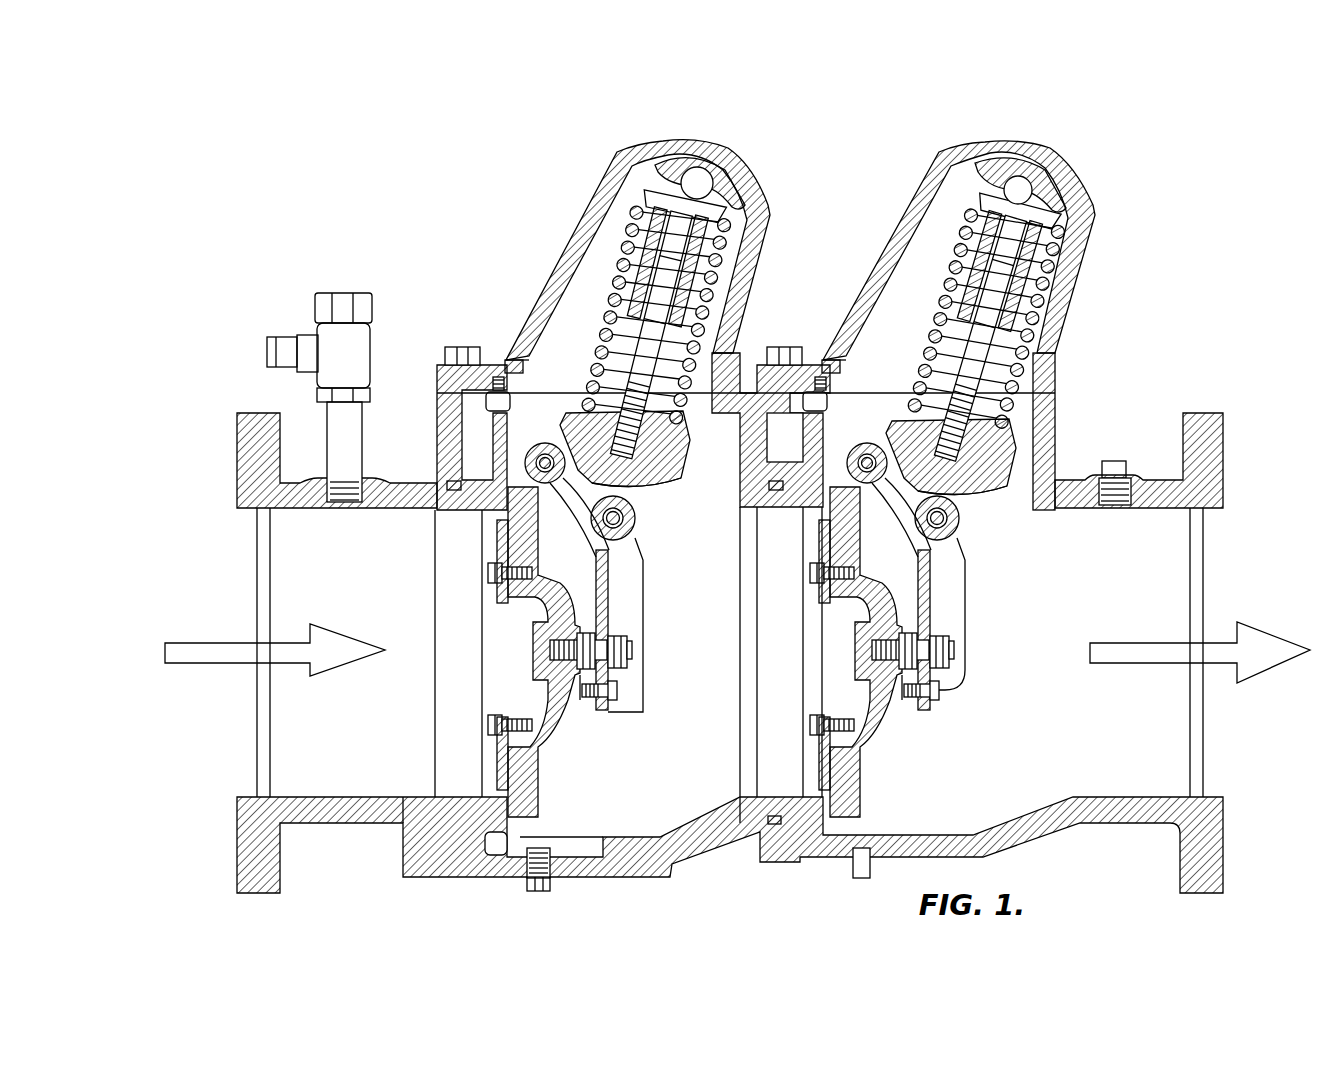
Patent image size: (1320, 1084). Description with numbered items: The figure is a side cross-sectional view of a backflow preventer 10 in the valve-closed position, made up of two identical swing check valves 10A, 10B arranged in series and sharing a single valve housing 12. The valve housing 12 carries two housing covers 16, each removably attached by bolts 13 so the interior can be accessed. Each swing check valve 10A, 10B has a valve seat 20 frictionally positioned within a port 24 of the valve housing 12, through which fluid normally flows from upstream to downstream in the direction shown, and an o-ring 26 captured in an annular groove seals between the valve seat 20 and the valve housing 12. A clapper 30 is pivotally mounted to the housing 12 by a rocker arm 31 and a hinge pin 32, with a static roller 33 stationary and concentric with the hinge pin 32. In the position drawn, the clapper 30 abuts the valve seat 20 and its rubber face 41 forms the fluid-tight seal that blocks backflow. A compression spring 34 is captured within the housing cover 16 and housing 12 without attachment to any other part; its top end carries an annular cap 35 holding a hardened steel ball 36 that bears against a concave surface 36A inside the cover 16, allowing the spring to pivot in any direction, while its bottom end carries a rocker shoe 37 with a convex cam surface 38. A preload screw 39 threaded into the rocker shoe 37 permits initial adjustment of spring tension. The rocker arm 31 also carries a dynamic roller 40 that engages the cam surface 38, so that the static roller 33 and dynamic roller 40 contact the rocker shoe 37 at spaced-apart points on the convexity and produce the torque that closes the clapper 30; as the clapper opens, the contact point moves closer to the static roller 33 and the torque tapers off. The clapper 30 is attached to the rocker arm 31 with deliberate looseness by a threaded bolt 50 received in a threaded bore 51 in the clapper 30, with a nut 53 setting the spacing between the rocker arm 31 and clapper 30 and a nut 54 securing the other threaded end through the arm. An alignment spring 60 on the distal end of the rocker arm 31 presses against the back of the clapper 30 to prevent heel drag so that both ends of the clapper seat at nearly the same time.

The backflow preventer 10 is at (503, 170).
The swing check valve 10A is at (549, 275).
The swing check valve 10B is at (896, 235).
The valve housing 12 is at (265, 432).
The bolts 13 is at (462, 352).
The housing cover 16 is at (760, 280).
The valve seat 20 is at (540, 790).
The port 24 is at (405, 842).
The o-ring 26 is at (440, 480).
The clapper 30 is at (570, 713).
The rocker arm 31 is at (630, 572).
The hinge pin 32 is at (545, 445).
The static roller 33 is at (517, 350).
The compression spring 34 is at (640, 230).
The annular cap 35 is at (738, 218).
The ball 36 is at (695, 178).
The concave surface 36A is at (745, 200).
The rocker shoe 37 is at (655, 472).
The cam surface 38 is at (640, 490).
The preload screw 39 is at (985, 322).
The dynamic roller 40 is at (622, 530).
The rubber face 41 is at (548, 705).
The threaded bolt 50 is at (547, 638).
The threaded bore 51 is at (600, 700).
The nut 53 is at (600, 653).
The nut 54 is at (622, 668).
The alignment spring 60 is at (602, 690).